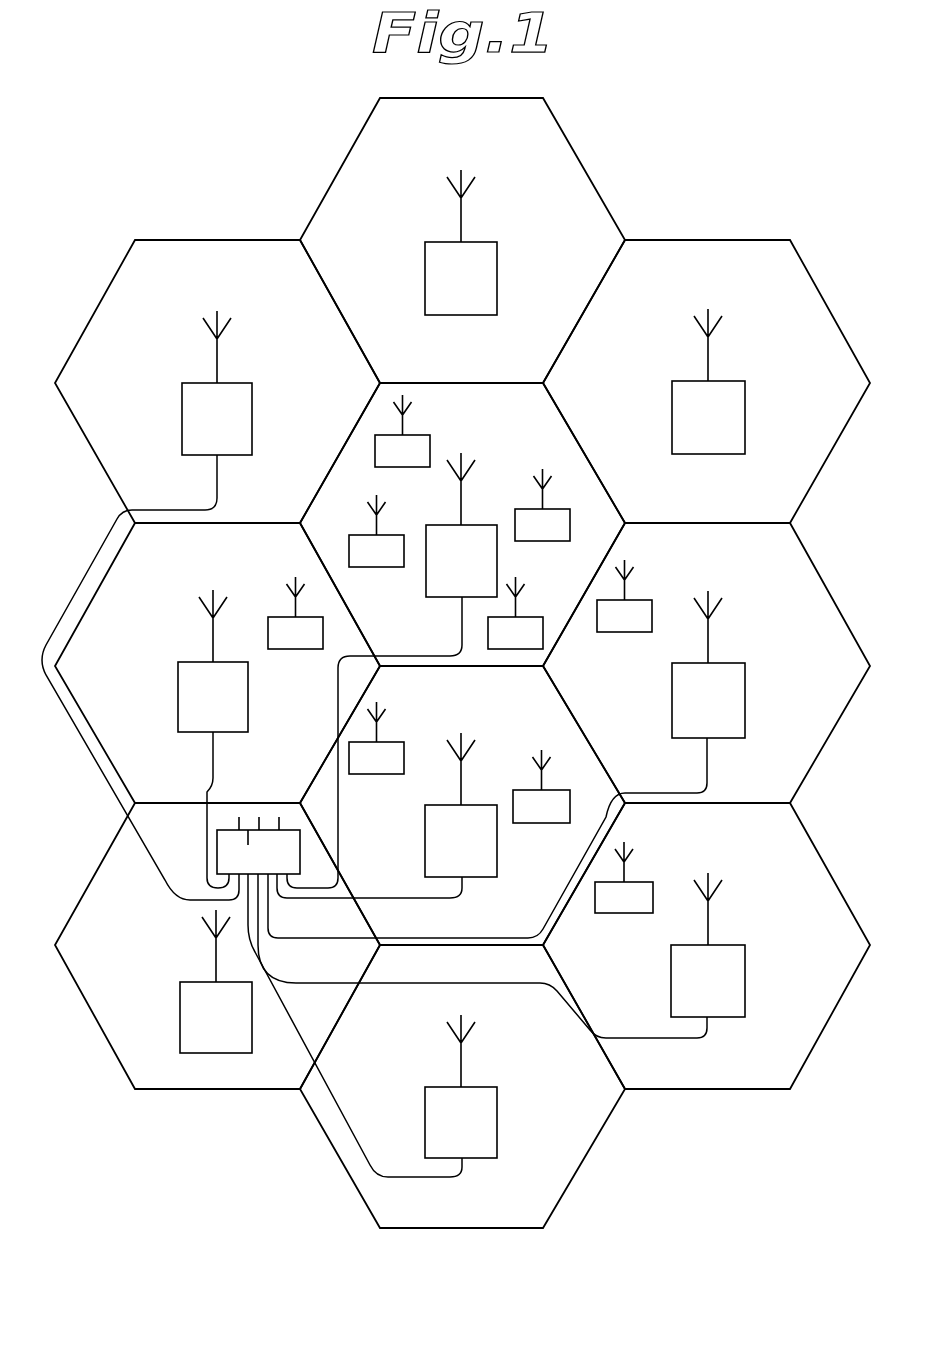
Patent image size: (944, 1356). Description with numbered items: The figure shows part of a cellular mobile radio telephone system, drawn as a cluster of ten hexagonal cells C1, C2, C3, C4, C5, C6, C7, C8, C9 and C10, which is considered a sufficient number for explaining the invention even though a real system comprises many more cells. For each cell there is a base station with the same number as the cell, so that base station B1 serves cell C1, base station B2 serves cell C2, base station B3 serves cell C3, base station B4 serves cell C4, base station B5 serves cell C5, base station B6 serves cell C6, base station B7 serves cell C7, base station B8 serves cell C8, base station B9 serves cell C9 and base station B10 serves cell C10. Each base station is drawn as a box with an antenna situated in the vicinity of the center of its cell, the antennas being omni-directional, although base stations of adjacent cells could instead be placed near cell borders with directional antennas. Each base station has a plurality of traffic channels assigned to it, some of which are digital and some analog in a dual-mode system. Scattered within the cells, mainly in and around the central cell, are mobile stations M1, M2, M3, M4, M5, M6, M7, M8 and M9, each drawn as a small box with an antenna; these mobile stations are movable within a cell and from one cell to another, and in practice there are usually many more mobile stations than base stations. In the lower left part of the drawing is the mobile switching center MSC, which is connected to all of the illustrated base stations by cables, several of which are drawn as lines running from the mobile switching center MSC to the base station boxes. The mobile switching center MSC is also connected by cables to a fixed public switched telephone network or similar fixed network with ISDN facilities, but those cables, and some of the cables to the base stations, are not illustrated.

The base station B1 is at (461, 525).
The base station B2 is at (708, 381).
The base station B3 is at (708, 664).
The base station B4 is at (461, 805).
The base station B5 is at (213, 661).
The base station B6 is at (217, 383).
The base station B7 is at (461, 242).
The base station B8 is at (708, 945).
The base station B9 is at (461, 1086).
The base station B10 is at (216, 981).
The mobile station M1 is at (624, 877).
The mobile station M2 is at (295, 613).
The mobile station M3 is at (376, 531).
The mobile station M4 is at (542, 505).
The mobile station M5 is at (624, 596).
The mobile station M6 is at (402, 431).
The mobile station M7 is at (515, 613).
The mobile station M8 is at (541, 786).
The mobile station M9 is at (376, 738).
The cell C1 is at (400, 647).
The cell C2 is at (648, 509).
The cell C3 is at (648, 789).
The cell C4 is at (402, 929).
The cell C5 is at (158, 791).
The cell C6 is at (158, 509).
The cell C7 is at (404, 366).
The cell C8 is at (648, 1072).
The cell C9 is at (402, 1211).
The cell C10 is at (166, 1072).
The mobile switching center MSC is at (258, 845).